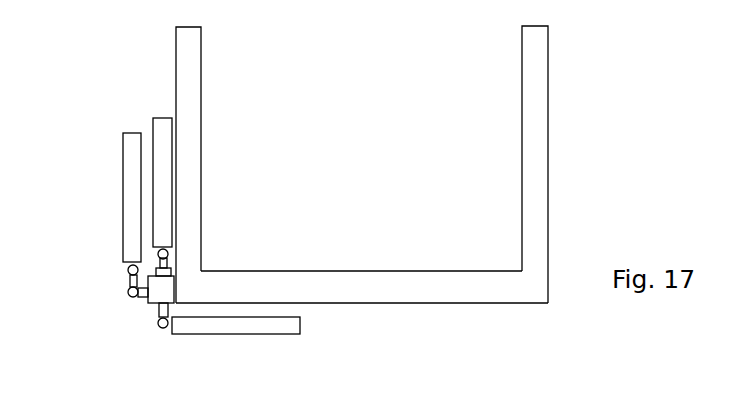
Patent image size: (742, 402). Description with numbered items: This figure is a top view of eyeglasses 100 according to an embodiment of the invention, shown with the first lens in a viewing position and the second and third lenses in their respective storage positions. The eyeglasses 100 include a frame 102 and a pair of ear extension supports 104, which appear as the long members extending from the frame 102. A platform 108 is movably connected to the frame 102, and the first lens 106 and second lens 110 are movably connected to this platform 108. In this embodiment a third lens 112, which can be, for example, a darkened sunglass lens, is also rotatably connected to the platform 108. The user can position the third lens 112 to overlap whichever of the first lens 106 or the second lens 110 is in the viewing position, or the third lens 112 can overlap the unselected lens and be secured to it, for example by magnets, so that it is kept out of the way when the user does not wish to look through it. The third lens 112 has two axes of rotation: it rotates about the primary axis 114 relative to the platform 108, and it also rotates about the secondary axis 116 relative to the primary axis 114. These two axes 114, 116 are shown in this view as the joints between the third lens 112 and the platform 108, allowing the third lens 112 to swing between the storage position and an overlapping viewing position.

The eyeglasses 100 is at (436, 100).
The frame 102 is at (470, 268).
The ear extension supports 104 is at (203, 102).
The first lens 106 is at (278, 335).
The platform 108 is at (148, 302).
The second lens 110 is at (152, 127).
The third lens 112 is at (122, 196).
The primary axis 114 is at (128, 292).
The secondary axis 116 is at (128, 269).